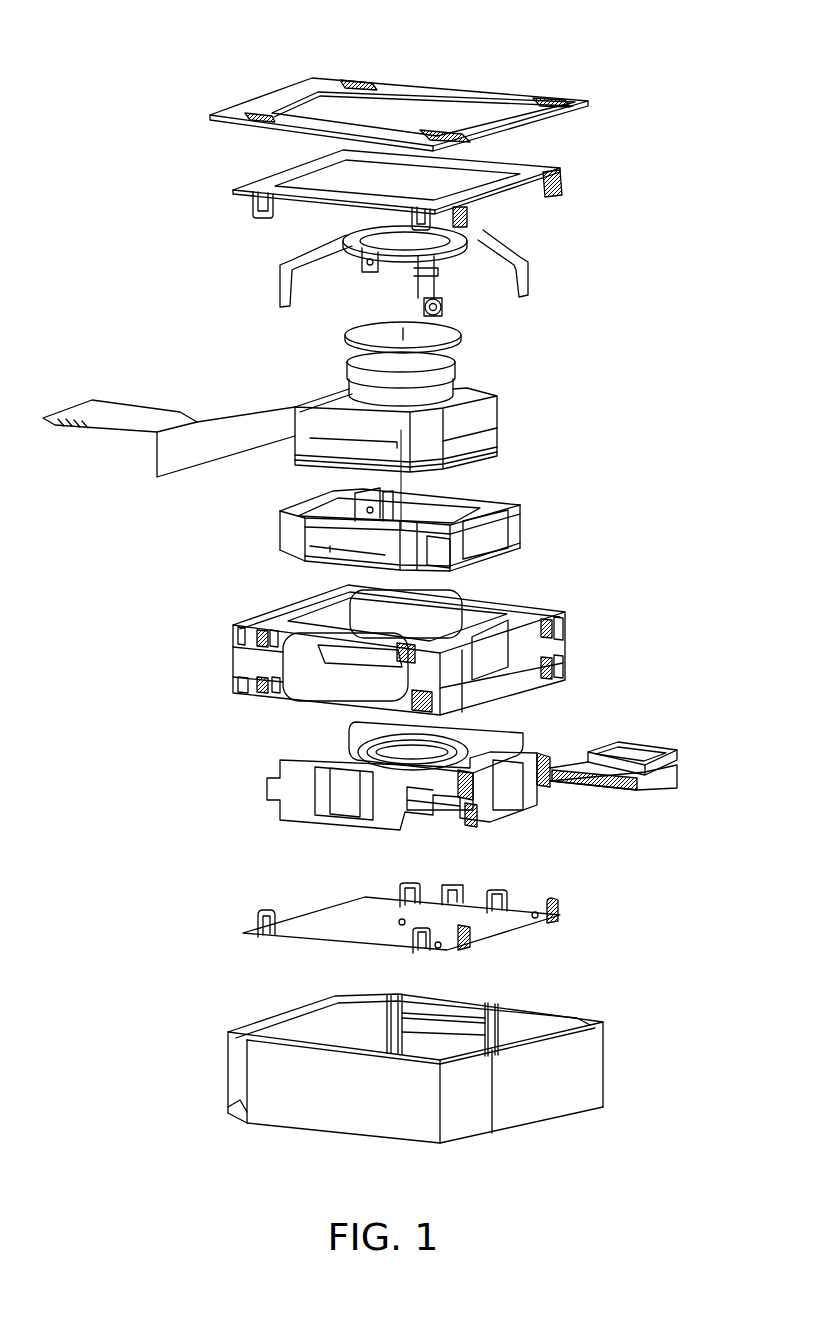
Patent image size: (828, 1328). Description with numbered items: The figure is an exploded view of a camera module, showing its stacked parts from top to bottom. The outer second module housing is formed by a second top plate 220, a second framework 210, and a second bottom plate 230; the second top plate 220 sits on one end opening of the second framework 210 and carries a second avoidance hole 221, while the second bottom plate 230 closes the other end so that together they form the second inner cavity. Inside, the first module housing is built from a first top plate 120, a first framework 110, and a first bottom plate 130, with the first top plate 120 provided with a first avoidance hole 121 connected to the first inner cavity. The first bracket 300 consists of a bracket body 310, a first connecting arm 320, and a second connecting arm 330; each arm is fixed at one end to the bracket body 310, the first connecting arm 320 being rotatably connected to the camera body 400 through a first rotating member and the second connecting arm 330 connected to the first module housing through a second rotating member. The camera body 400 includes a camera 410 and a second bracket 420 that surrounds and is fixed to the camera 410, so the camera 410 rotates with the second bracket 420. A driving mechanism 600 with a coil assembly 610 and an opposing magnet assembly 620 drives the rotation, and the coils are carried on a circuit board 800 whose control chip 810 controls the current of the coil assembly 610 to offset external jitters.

The first framework 110 is at (568, 614).
The first top plate 120 is at (469, 190).
The first avoidance hole 121 is at (560, 191).
The first bottom plate 130 is at (530, 923).
The second framework 210 is at (409, 1096).
The second top plate 220 is at (457, 77).
The second avoidance hole 221 is at (404, 112).
The second bottom plate 230 is at (240, 1120).
The first bracket 300 is at (484, 280).
The bracket body 310 is at (487, 227).
The first connecting arm 320 is at (533, 267).
The second connecting arm 330 is at (447, 307).
The camera body 400 is at (366, 461).
The camera 410 is at (498, 405).
The second bracket 420 is at (455, 529).
The driving mechanism 600 is at (294, 675).
The coil assembly 610 is at (328, 766).
The magnet assembly 620 is at (307, 556).
The circuit board 800 is at (268, 808).
The control chip 810 is at (629, 742).